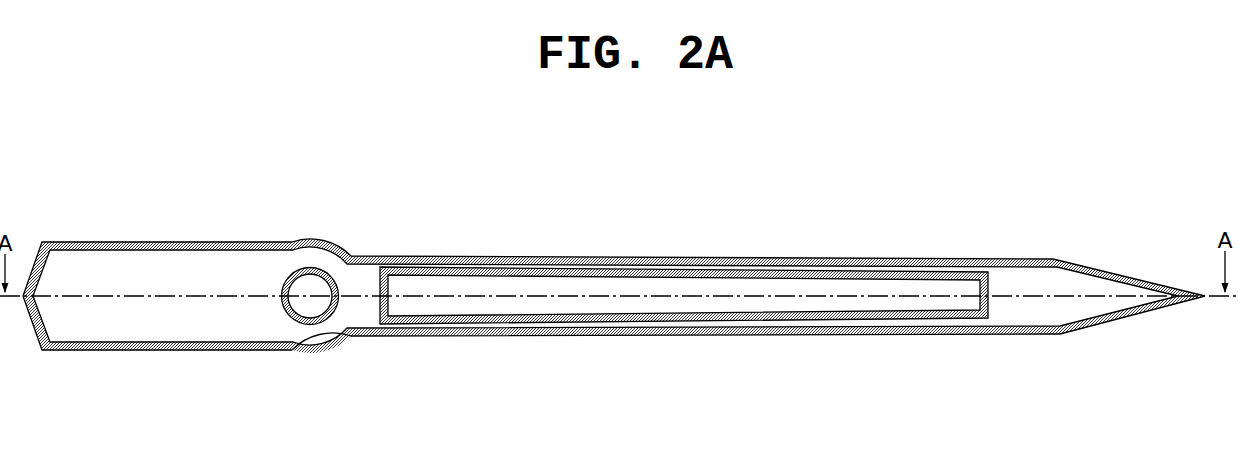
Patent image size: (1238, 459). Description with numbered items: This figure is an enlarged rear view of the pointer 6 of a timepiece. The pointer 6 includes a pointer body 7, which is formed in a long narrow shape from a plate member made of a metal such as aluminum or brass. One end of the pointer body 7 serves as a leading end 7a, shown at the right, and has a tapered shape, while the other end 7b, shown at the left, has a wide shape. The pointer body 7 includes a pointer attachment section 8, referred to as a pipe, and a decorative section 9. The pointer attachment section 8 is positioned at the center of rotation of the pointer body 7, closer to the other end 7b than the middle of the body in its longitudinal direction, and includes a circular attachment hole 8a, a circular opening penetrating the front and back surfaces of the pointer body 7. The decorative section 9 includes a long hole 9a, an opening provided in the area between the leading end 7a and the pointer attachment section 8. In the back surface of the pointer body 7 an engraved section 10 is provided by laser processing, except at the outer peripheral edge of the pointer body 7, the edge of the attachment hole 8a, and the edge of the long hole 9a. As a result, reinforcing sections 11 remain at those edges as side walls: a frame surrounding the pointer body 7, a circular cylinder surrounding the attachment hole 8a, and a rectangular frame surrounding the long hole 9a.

The pointer 6 is at (614, 285).
The pointer body 7 is at (700, 257).
The leading end 7a is at (1120, 287).
The other end 7b is at (80, 283).
The pointer attachment section 8 is at (307, 328).
The attachment hole 8a is at (310, 297).
The decorative section 9 is at (684, 334).
The long hole 9a is at (547, 302).
The engraved section 10 is at (160, 327).
The reinforcing sections 11 is at (188, 247).